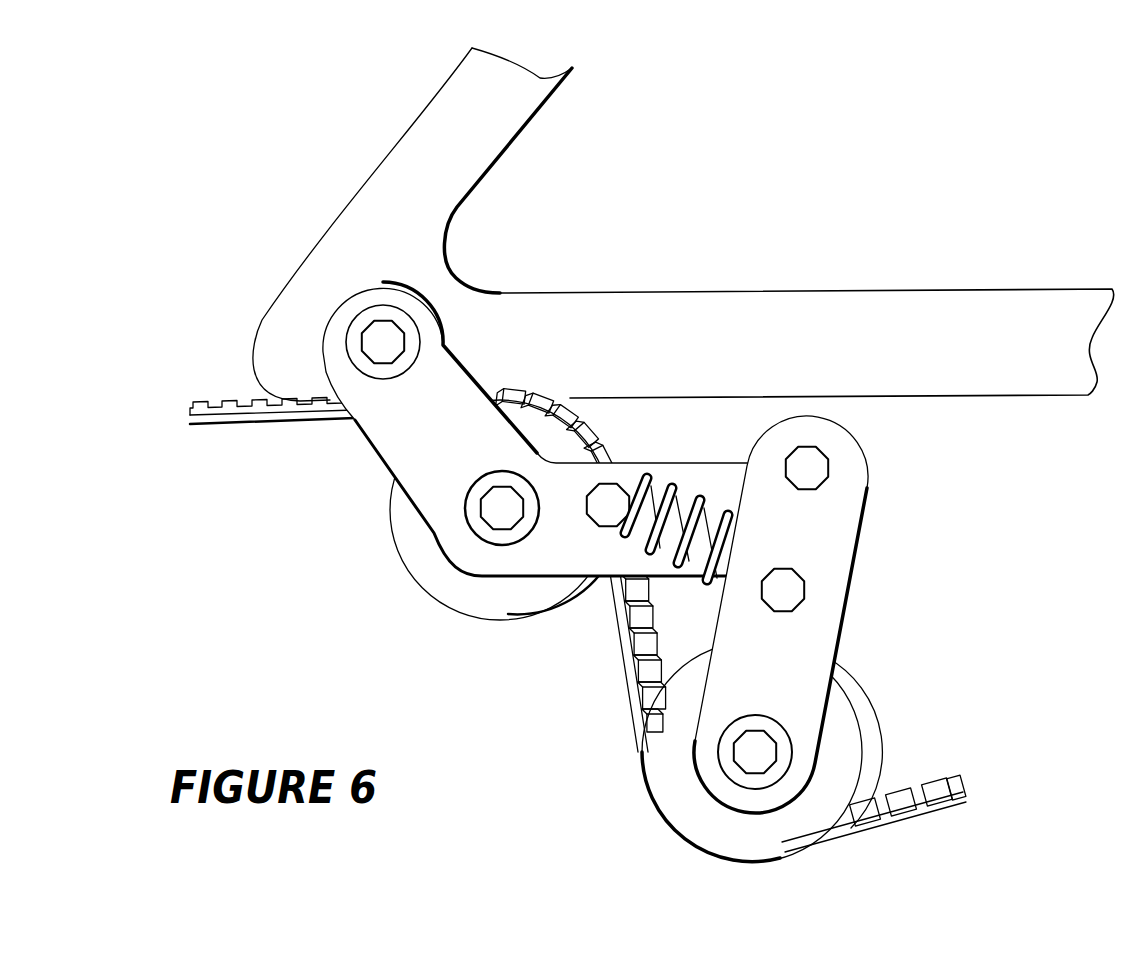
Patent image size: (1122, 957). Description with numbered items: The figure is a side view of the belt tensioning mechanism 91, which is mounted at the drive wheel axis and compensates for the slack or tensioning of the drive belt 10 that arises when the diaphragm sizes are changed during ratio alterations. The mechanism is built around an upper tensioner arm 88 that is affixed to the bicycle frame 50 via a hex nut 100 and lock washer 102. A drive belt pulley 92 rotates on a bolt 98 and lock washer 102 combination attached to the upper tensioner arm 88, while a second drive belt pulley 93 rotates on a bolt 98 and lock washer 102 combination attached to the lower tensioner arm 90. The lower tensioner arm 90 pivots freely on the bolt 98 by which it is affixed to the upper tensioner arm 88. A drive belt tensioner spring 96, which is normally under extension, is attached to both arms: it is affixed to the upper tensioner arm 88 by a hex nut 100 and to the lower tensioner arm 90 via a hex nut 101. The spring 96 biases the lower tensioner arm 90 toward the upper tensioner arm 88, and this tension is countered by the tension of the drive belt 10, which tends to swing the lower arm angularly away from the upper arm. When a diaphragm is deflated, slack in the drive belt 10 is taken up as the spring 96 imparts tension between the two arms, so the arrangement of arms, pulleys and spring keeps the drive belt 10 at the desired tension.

The drive belt 10 is at (222, 423).
The bicycle frame 50 is at (383, 159).
The upper tensioner arm 88 is at (374, 448).
The lower tensioner arm 90 is at (840, 632).
The belt tensioning mechanism 91 is at (577, 511).
The drive belt pulley 92 is at (403, 557).
The drive belt pulley 93 is at (653, 803).
The drive belt tensioner spring 96 is at (704, 586).
The bolt 98 is at (805, 472).
The hex nut 100 is at (395, 338).
The hex nut 101 is at (785, 592).
The lock washer 102 is at (518, 488).